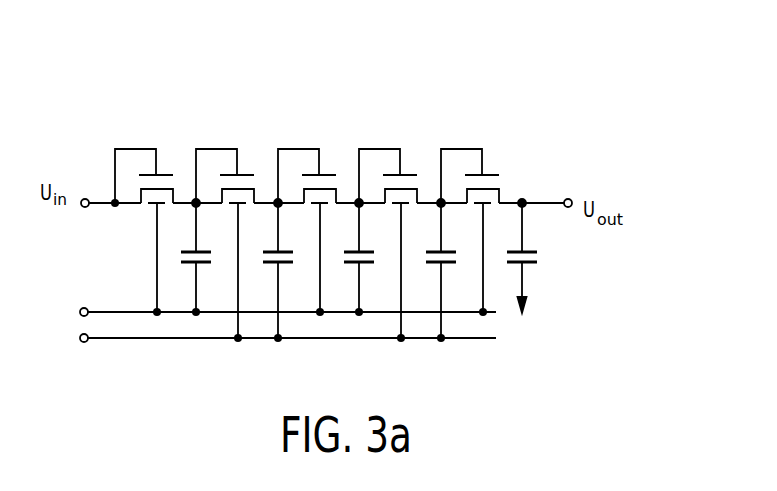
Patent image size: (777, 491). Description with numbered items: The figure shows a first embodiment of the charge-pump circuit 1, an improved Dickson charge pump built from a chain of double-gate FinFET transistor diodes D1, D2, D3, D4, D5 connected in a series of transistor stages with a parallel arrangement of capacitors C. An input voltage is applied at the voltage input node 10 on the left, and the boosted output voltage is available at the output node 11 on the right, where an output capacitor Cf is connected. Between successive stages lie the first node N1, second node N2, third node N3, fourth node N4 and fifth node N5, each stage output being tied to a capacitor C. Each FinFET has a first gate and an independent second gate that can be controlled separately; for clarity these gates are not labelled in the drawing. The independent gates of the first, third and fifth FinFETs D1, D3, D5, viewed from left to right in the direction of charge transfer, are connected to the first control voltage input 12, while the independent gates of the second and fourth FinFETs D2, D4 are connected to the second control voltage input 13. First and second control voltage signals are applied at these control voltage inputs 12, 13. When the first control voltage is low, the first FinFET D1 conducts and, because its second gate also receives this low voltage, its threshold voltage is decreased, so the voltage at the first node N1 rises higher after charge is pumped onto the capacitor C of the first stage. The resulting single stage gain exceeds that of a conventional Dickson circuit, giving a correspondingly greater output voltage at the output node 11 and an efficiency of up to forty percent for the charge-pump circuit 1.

The charge-pump circuit 1 is at (530, 81).
The voltage input node 10 is at (81, 201).
The output node 11 is at (572, 201).
The first control voltage input 12 is at (81, 310).
The second control voltage input 13 is at (87, 342).
The first FinFET D1 is at (168, 174).
The second FinFET D2 is at (250, 174).
The third FinFET D3 is at (331, 174).
The fourth FinFET D4 is at (412, 174).
The fifth FinFET D5 is at (494, 174).
The first node N1 is at (194, 208).
The second node N2 is at (276, 208).
The third node N3 is at (357, 208).
The fourth node N4 is at (439, 208).
The fifth node N5 is at (520, 208).
The capacitor C is at (467, 290).
The output capacitor Cf is at (537, 264).